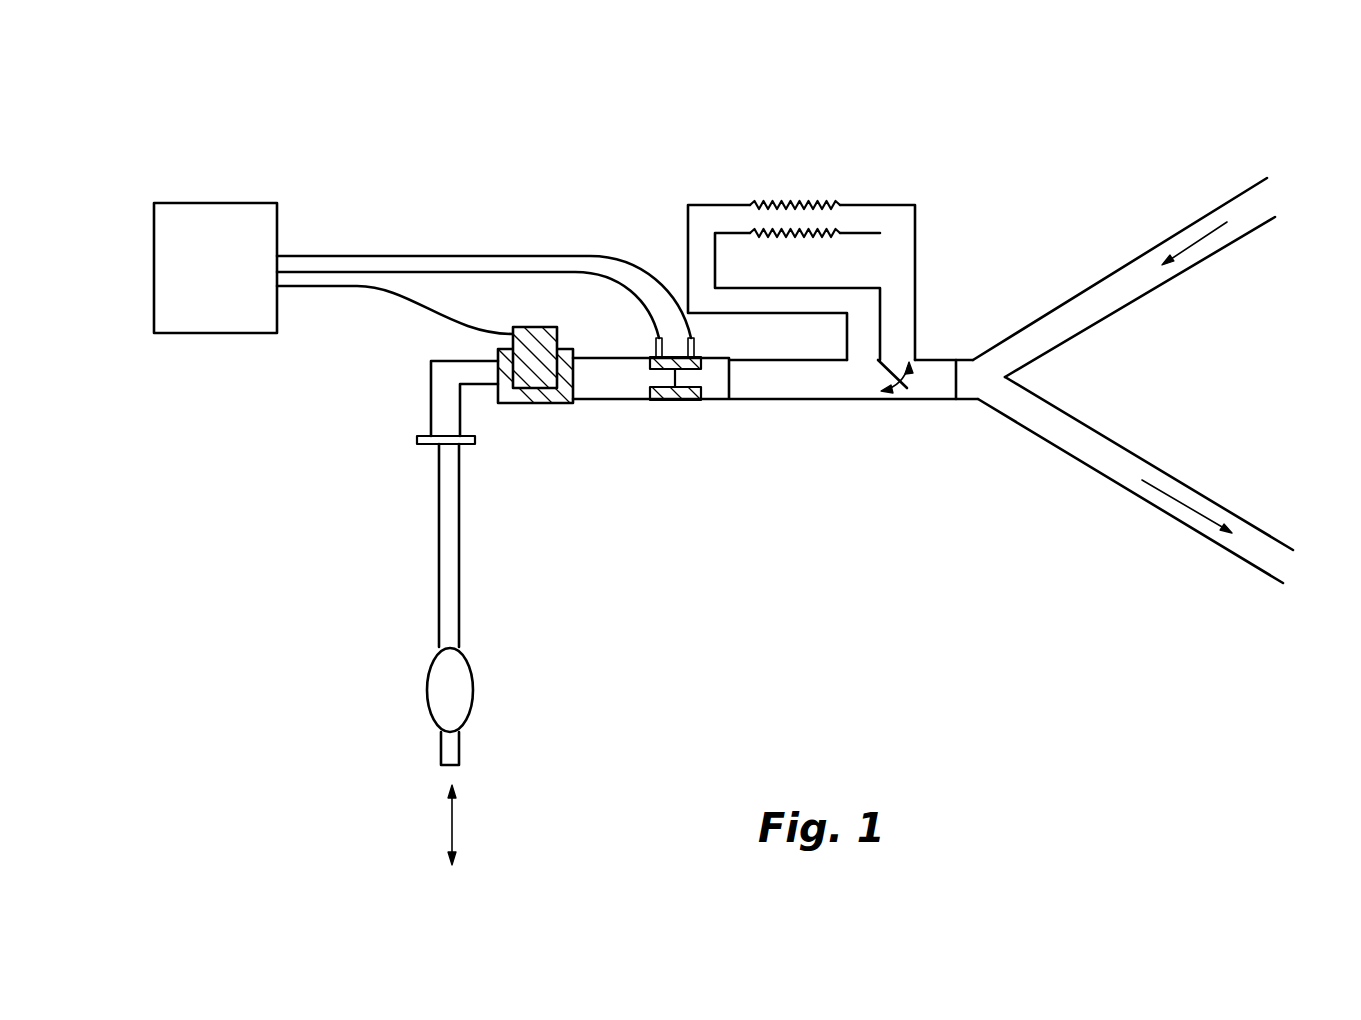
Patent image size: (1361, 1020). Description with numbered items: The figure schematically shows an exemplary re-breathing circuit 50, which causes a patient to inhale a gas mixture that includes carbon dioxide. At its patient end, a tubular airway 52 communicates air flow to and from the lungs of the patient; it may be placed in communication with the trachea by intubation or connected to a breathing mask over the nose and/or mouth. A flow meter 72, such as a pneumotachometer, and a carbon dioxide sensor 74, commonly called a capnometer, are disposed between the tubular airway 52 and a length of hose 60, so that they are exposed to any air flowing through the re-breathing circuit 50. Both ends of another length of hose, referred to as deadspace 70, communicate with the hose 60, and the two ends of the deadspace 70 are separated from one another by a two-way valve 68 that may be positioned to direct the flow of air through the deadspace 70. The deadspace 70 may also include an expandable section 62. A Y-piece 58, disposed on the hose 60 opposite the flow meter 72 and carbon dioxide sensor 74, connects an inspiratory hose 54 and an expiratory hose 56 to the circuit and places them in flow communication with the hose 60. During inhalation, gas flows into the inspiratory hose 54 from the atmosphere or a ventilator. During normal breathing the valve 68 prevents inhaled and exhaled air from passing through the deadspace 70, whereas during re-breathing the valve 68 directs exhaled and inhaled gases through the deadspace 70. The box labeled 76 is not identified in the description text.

The re-breathing circuit 50 is at (1098, 177).
The tubular airway 52 is at (440, 571).
The inspiratory hose 54 is at (1165, 285).
The expiratory hose 56 is at (1148, 458).
The Y-piece 58 is at (963, 358).
The hose 60 is at (748, 383).
The expandable section 62 is at (793, 190).
The two-way valve 68 is at (913, 422).
The deadspace 70 is at (849, 212).
The flow meter 72 is at (668, 427).
The carbon dioxide sensor 74 is at (540, 432).
The controller 76 is at (221, 219).